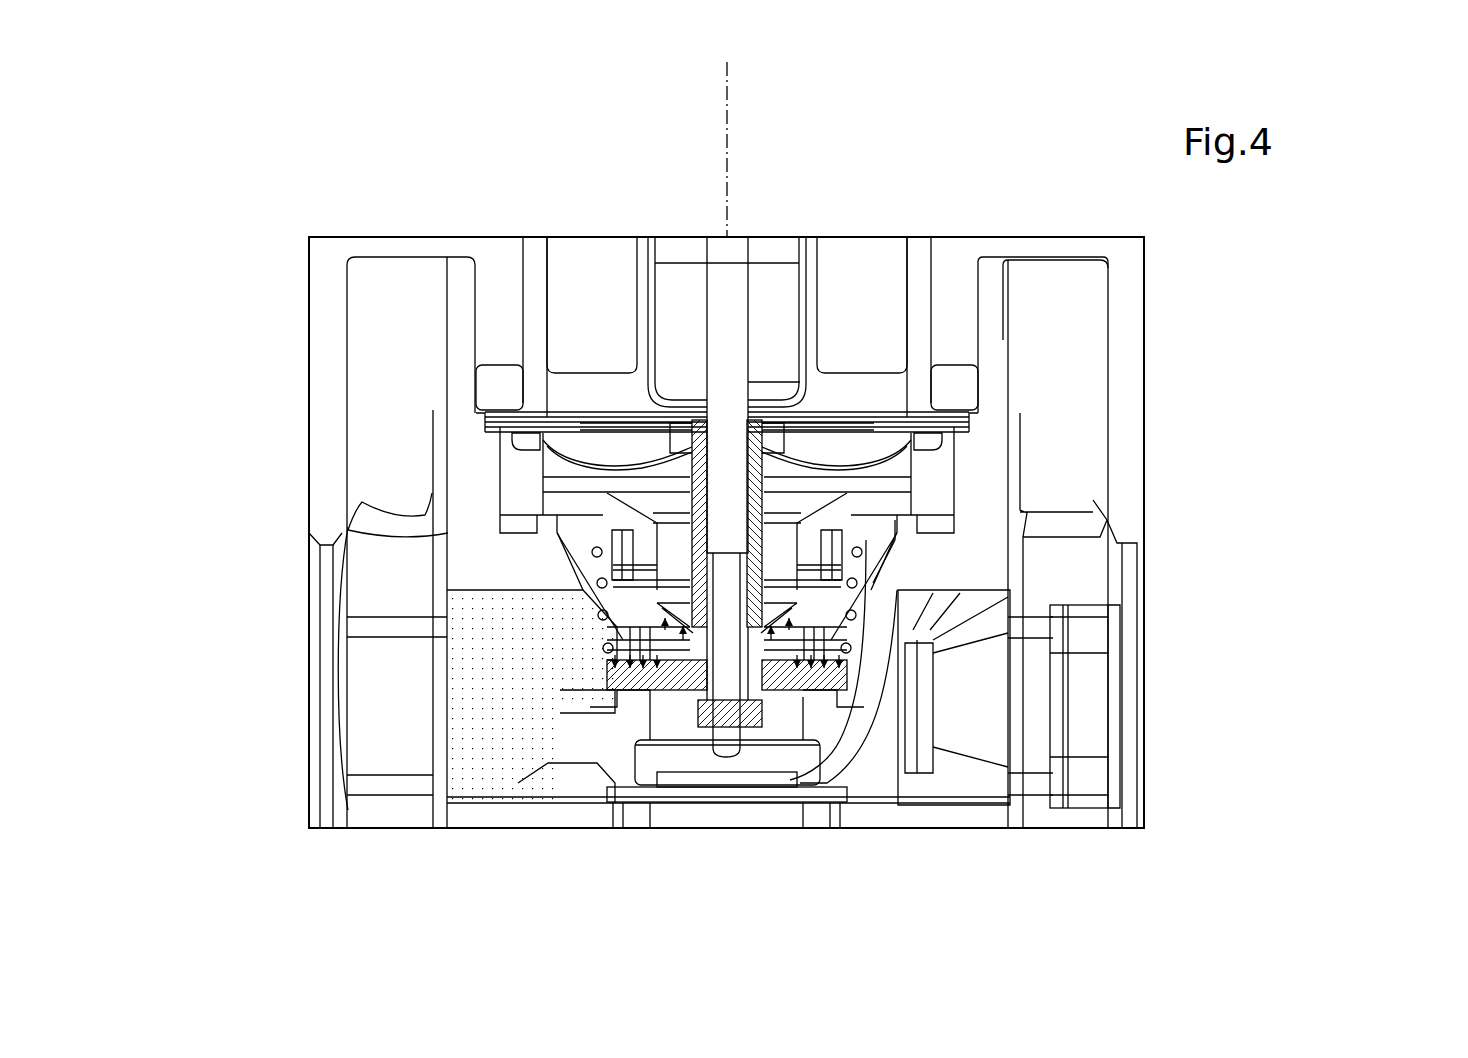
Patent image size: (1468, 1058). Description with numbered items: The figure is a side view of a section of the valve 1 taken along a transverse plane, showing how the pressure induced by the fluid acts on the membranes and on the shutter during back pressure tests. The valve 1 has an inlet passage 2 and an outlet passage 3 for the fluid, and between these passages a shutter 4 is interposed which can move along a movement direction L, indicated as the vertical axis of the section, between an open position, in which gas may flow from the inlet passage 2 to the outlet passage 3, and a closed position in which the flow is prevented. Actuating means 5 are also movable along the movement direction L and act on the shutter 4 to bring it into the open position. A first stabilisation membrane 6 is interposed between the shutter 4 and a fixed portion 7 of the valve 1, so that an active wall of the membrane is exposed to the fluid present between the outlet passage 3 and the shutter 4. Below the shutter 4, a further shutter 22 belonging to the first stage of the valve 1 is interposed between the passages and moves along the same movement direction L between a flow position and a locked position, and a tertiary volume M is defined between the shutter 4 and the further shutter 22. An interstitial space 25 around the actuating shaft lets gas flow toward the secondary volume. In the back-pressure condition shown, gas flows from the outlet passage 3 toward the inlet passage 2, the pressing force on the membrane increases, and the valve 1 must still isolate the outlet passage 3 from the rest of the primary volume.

The valve 1 is at (213, 153).
The inlet passage 2 is at (1169, 684).
The outlet passage 3 is at (270, 697).
The shutter 4 is at (602, 677).
The actuating means 5 is at (750, 383).
The first stabilisation membrane 6 is at (785, 615).
The fixed portion 7 is at (643, 557).
The further shutter 22 is at (690, 820).
The interstitial space 25 is at (753, 577).
The tertiary volume M is at (773, 718).
The movement direction L is at (727, 175).